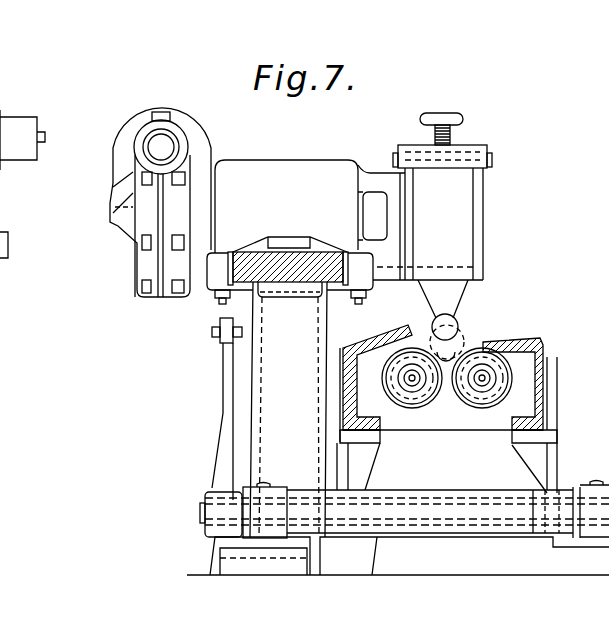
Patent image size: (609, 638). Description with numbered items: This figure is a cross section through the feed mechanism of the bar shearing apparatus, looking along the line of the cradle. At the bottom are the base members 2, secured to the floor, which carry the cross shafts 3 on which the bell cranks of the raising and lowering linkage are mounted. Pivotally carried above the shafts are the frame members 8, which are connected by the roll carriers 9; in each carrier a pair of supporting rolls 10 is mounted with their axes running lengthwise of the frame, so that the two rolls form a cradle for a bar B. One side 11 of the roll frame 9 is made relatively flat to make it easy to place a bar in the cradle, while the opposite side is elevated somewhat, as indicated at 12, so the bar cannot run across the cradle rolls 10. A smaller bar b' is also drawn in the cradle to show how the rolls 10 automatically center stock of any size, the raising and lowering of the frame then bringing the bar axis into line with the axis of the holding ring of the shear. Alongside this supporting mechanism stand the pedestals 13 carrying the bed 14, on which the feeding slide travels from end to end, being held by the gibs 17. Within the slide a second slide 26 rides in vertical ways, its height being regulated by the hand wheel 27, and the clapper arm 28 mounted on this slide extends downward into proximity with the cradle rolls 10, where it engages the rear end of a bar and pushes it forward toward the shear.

The base member 2 is at (353, 567).
The cross shaft 3 is at (200, 512).
The frame member 8 is at (558, 398).
The roll carrier 9 is at (423, 423).
The supporting roll 10 is at (470, 405).
The flat side of roll frame 11 is at (508, 342).
The elevated side of roll frame 12 is at (409, 343).
The pedestal 13 is at (273, 418).
The bed 14 is at (299, 274).
The gib 17 is at (232, 262).
The slide 26 is at (477, 223).
The hand wheel 27 is at (444, 116).
The clapper arm 28 is at (457, 199).
The bar B is at (458, 327).
The smaller size bar b' is at (467, 335).